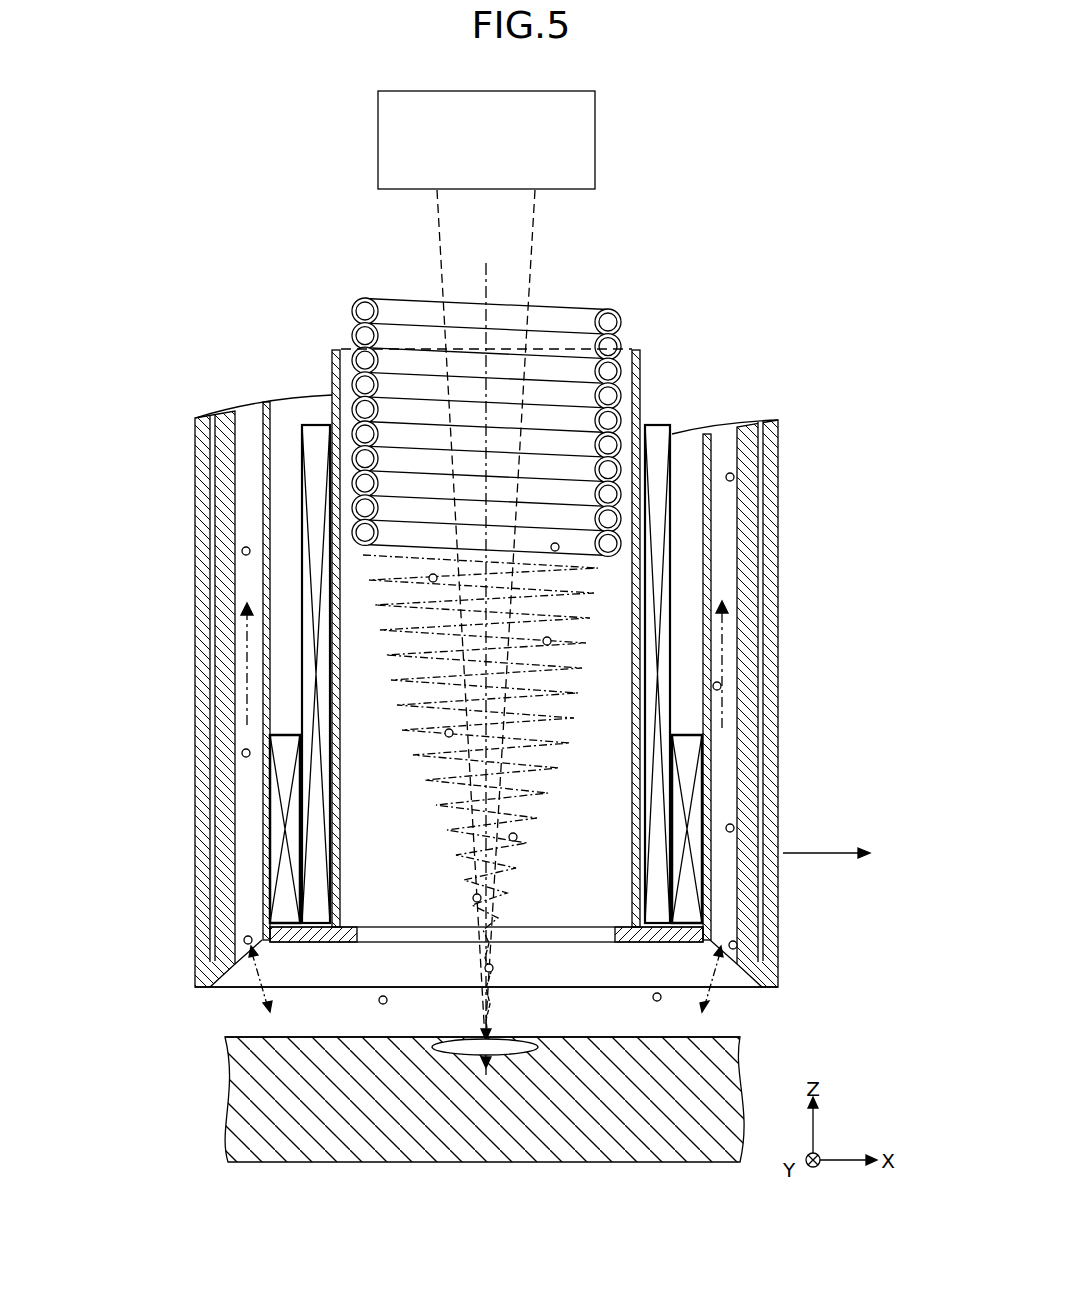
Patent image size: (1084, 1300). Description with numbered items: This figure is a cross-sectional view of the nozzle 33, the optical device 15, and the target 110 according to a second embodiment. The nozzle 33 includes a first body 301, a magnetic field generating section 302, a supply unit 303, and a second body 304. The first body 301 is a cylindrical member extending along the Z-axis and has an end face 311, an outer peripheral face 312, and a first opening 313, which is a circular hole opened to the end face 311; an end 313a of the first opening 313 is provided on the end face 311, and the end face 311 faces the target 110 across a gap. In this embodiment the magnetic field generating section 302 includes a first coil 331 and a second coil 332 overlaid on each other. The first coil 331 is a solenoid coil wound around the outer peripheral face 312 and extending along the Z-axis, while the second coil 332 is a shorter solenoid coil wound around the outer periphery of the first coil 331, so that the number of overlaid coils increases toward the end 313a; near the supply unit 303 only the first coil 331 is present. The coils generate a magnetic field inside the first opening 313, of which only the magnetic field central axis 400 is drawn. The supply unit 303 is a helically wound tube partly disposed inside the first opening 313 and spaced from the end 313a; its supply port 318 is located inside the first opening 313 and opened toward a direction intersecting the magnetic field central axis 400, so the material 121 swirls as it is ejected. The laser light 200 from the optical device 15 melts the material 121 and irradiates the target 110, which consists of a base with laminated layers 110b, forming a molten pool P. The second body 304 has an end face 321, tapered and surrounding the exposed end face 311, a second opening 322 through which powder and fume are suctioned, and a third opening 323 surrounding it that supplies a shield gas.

The optical device 15 is at (596, 130).
The laser light 200 is at (535, 224).
The magnetic field central axis 400 is at (487, 277).
The supply unit 303 is at (617, 320).
The outer peripheral face 312 is at (641, 365).
The first opening 313 is at (623, 395).
The second body 304 is at (775, 432).
The material 121 is at (734, 480).
The supply port 318 is at (608, 545).
The nozzle 33 is at (227, 376).
The first body 301 is at (333, 352).
The magnetic field generating section 302 is at (301, 418).
The first coil 331 is at (318, 472).
The second coil 332 is at (290, 770).
The second opening 322 is at (252, 820).
The third opening 323 is at (210, 887).
The end face 321 is at (225, 995).
The layer 110b is at (312, 1055).
The target 110 is at (720, 1030).
The end of the first opening 313a is at (412, 935).
The end face 311 is at (623, 943).
The molten pool P is at (508, 1050).